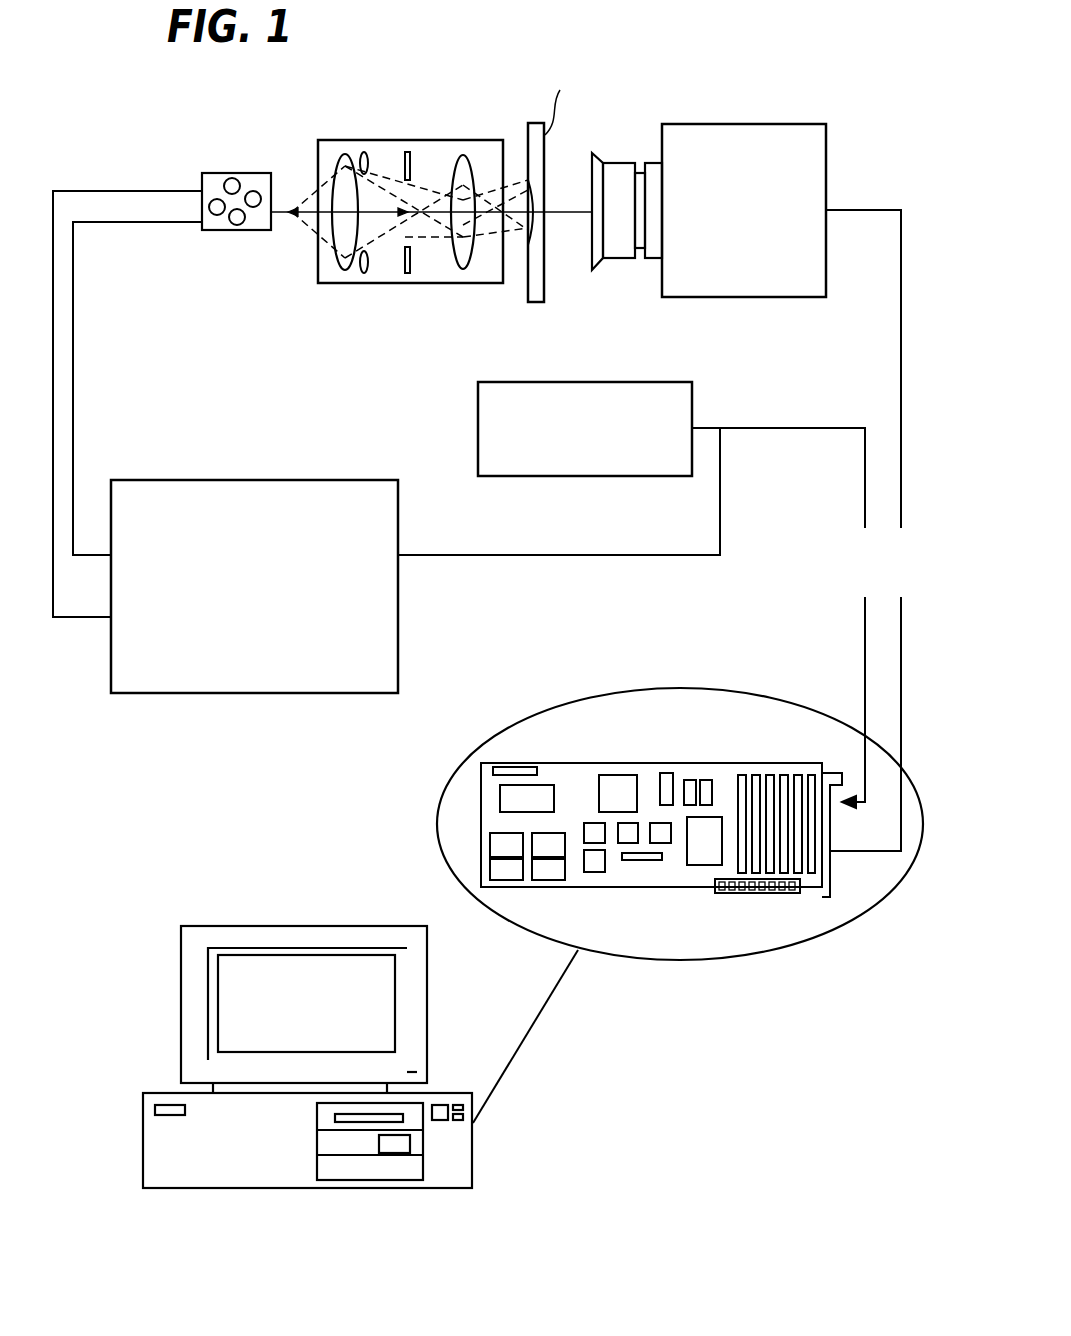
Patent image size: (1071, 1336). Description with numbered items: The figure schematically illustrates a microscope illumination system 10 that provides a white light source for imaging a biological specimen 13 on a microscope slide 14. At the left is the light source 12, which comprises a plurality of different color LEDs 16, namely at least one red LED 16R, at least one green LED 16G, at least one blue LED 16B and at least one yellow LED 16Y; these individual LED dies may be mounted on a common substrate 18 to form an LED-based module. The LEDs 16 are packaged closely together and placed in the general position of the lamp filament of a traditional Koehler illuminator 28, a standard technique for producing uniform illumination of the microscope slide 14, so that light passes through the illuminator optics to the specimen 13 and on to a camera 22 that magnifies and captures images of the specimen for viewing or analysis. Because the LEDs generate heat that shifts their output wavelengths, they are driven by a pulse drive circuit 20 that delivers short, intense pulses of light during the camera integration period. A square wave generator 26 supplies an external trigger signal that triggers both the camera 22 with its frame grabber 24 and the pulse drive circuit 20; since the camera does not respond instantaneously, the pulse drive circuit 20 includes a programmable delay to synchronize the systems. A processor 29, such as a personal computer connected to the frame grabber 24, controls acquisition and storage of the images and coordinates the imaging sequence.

The microscope illumination system 10 is at (746, 1134).
The light source 12 is at (209, 229).
The biological specimen 13 is at (534, 194).
The microscope slide 14 is at (545, 290).
The LEDs 16 is at (210, 198).
The red LED 16R is at (227, 178).
The green LED 16G is at (212, 218).
The blue LED 16B is at (237, 225).
The yellow LED 16Y is at (255, 208).
The common substrate 18 is at (202, 180).
The pulse drive circuit 20 is at (130, 480).
The camera 22 is at (738, 297).
The frame grabber 24 is at (590, 696).
The square wave generator 26 is at (478, 404).
The Koehler illuminator 28 is at (358, 140).
The processor 29 is at (473, 1152).